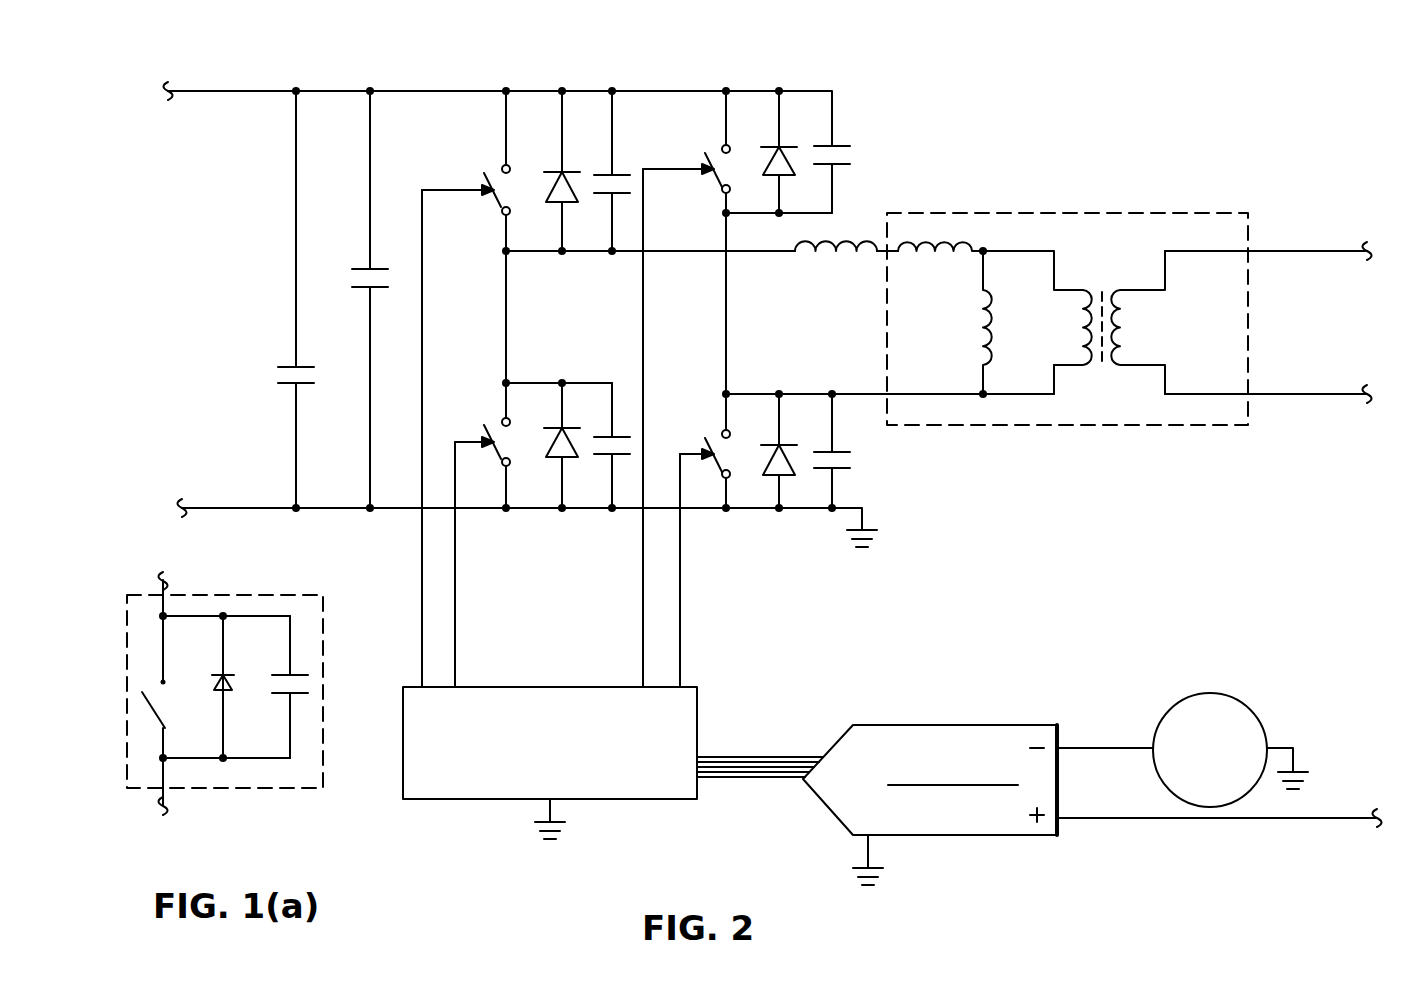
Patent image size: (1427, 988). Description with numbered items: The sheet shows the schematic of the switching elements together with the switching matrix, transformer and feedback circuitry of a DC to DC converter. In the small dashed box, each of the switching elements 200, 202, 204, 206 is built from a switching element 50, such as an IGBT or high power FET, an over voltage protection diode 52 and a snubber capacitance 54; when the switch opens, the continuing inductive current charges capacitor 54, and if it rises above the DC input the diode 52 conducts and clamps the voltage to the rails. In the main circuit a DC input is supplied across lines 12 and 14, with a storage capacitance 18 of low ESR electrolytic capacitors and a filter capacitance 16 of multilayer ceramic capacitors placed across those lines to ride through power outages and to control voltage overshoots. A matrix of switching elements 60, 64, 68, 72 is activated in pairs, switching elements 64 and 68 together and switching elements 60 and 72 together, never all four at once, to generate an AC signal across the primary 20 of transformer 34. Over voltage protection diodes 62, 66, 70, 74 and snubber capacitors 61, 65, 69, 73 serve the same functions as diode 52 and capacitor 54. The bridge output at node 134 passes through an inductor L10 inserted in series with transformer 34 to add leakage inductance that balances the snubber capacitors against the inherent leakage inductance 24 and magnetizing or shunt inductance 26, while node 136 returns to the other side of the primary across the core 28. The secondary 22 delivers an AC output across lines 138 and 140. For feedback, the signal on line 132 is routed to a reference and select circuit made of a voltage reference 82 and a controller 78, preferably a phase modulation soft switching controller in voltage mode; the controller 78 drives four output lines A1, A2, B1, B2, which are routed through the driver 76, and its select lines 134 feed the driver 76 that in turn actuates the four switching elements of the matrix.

In FIG. 2, the DC input line 12 is at (242, 91).
In FIG. 2, the DC input line 14 is at (209, 501).
In FIG. 2, the filter capacitance 16 is at (347, 273).
In FIG. 2, the storage capacitance 18 is at (273, 372).
In FIG. 2, the primary 20 is at (1073, 327).
In FIG. 2, the secondary 22 is at (1132, 328).
In FIG. 2, the leakage inductance 24 is at (923, 257).
In FIG. 2, the magnetizing or shunt inductance 26 is at (1002, 320).
In FIG. 2, the transformer core 28 is at (1110, 362).
In FIG. 2, the transformer 34 is at (1067, 353).
In FIG. 1A, the switching element 50 is at (140, 712).
In FIG. 1A, the over voltage protection diode 52 is at (228, 675).
In FIG. 1A, the snubber capacitance 54 is at (298, 672).
In FIG. 2, the switching element 60 is at (490, 170).
In FIG. 2, the snubber capacitor 61 is at (600, 175).
In FIG. 2, the over voltage protection diode 62 is at (550, 172).
In FIG. 2, the switching element 64 is at (490, 422).
In FIG. 2, the snubber capacitor 65 is at (600, 437).
In FIG. 2, the over voltage protection diode 66 is at (547, 447).
In FIG. 2, the switching element 68 is at (712, 150).
In FIG. 2, the snubber capacitor 69 is at (845, 146).
In FIG. 2, the over voltage protection diode 70 is at (765, 147).
In FIG. 2, the switching element 72 is at (716, 435).
In FIG. 2, the snubber capacitor 73 is at (848, 460).
In FIG. 2, the over voltage protection diode 74 is at (785, 445).
In FIG. 2, the driver 76 is at (402, 742).
In FIG. 2, the controller 78 is at (972, 837).
In FIG. 2, the voltage reference 82 is at (1180, 697).
In FIG. 2, the line 132 is at (1310, 820).
In FIG. 2, the select lines 134 is at (877, 250).
In FIG. 2, the bridge output node 136 is at (860, 393).
In FIG. 2, the line 138 is at (1307, 252).
In FIG. 2, the line 140 is at (1302, 395).
In FIG. 1A, the switching element 200 is at (226, 706).
In FIG. 1A, the switching element 202 is at (226, 706).
In FIG. 1A, the switching element 204 is at (226, 706).
In FIG. 1A, the switching element 206 is at (226, 706).
In FIG. 2, the inductor L10 is at (836, 268).
In FIG. 2, the output line A1 is at (738, 755).
In FIG. 2, the output line A2 is at (775, 757).
In FIG. 2, the output line B1 is at (725, 776).
In FIG. 2, the output line B2 is at (762, 782).